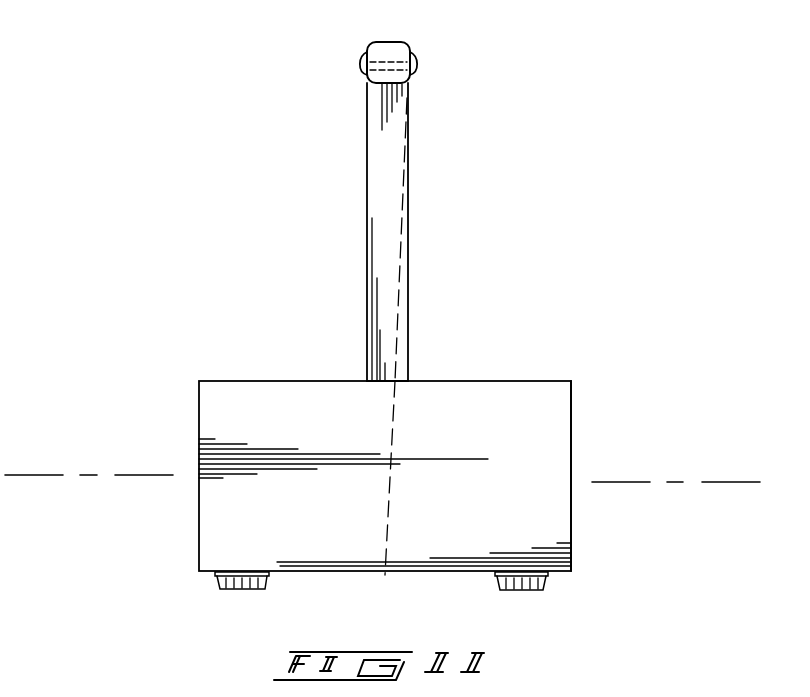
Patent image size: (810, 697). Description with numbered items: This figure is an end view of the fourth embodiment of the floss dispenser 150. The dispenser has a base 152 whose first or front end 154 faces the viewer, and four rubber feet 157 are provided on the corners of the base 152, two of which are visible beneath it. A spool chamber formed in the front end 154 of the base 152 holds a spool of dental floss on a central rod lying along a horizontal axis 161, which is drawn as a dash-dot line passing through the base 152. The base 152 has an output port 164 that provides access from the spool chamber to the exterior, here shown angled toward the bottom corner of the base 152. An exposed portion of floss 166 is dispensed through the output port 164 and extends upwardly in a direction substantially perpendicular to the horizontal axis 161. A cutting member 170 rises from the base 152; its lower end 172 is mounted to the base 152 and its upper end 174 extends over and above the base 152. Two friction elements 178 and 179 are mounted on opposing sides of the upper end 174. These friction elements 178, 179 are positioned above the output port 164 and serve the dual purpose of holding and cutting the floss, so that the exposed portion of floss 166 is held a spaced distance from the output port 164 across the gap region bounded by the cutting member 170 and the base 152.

The floss dispenser 150 is at (626, 363).
The base 152 is at (571, 488).
The first or front end 154 is at (538, 437).
The rubber feet 157 is at (235, 591).
The horizontal axis 161 is at (35, 475).
The output port 164 is at (382, 570).
The exposed portion of floss 166 is at (403, 265).
The cutting member 170 is at (385, 200).
The lower end 172 is at (403, 373).
The upper end 174 is at (388, 52).
The friction element 178 is at (416, 65).
The friction element 179 is at (362, 64).